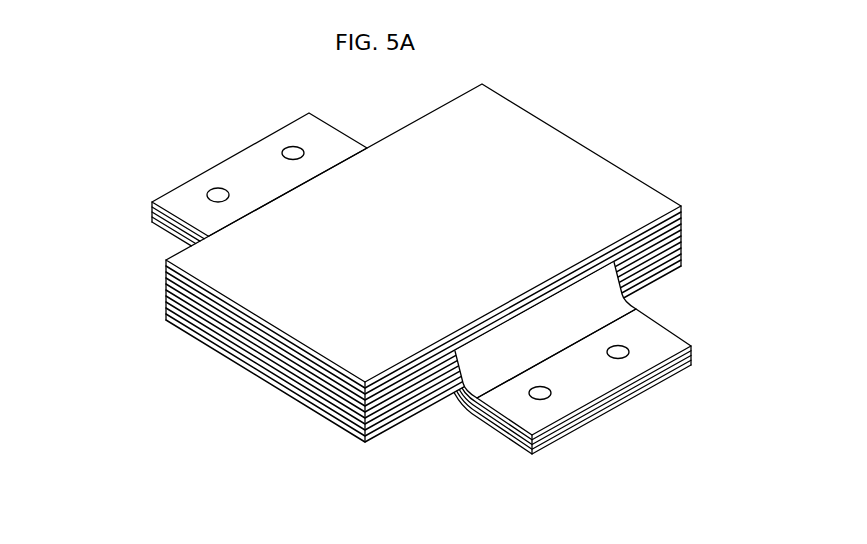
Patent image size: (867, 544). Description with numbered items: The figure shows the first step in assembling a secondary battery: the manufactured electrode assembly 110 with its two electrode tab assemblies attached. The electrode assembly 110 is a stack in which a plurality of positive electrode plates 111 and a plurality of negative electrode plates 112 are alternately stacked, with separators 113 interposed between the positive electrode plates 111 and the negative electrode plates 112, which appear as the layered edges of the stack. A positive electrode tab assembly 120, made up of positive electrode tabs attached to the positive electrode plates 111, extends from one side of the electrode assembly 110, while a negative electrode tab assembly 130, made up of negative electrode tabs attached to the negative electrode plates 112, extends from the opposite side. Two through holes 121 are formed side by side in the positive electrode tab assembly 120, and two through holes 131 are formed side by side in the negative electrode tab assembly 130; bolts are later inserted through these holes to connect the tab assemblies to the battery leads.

The electrode assembly 110 is at (357, 263).
The positive electrode plate 111 is at (167, 273).
The separator 113 is at (167, 275).
The negative electrode plate 112 is at (167, 280).
The positive electrode tab assembly 120 is at (566, 375).
The through hole 121 is at (550, 395).
The negative electrode tab assembly 130 is at (249, 169).
The through hole 131 is at (218, 190).